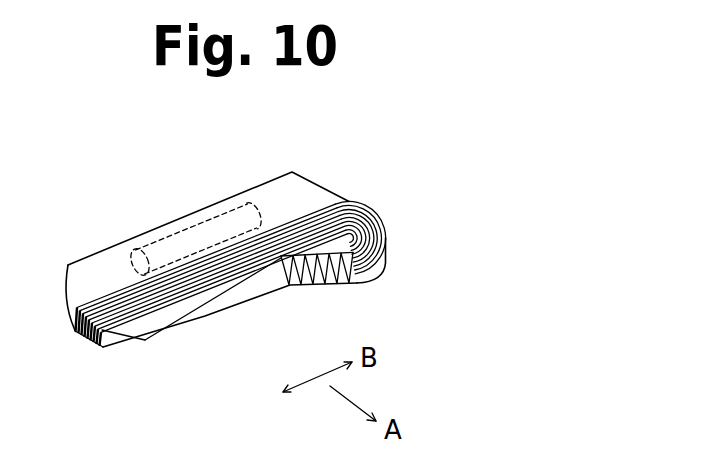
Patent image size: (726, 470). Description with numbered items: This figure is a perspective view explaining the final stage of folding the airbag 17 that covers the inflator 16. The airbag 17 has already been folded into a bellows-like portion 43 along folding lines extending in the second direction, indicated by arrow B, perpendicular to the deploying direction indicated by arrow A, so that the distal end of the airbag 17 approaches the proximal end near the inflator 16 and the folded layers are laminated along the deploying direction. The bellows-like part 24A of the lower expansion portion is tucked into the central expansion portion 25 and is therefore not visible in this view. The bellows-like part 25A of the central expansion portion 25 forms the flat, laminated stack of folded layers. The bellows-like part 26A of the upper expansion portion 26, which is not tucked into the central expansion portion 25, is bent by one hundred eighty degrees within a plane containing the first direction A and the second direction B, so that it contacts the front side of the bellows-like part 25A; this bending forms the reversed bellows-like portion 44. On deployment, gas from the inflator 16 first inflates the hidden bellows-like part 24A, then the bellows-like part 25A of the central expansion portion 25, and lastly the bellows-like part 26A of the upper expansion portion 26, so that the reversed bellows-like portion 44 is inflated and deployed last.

The inflator 16 is at (190, 222).
The airbag 17 is at (353, 172).
The bellows-like part of the lower expansion portion 24A is at (80, 346).
The bellows-like part of the central expansion portion 25A is at (243, 290).
The central expansion portion 25 is at (229, 324).
The bellows-like part of the upper expansion portion 26A is at (374, 210).
The upper expansion portion 26 is at (436, 235).
The bellows-like portion 43 is at (178, 326).
The reversed bellows-like portion 44 is at (358, 274).